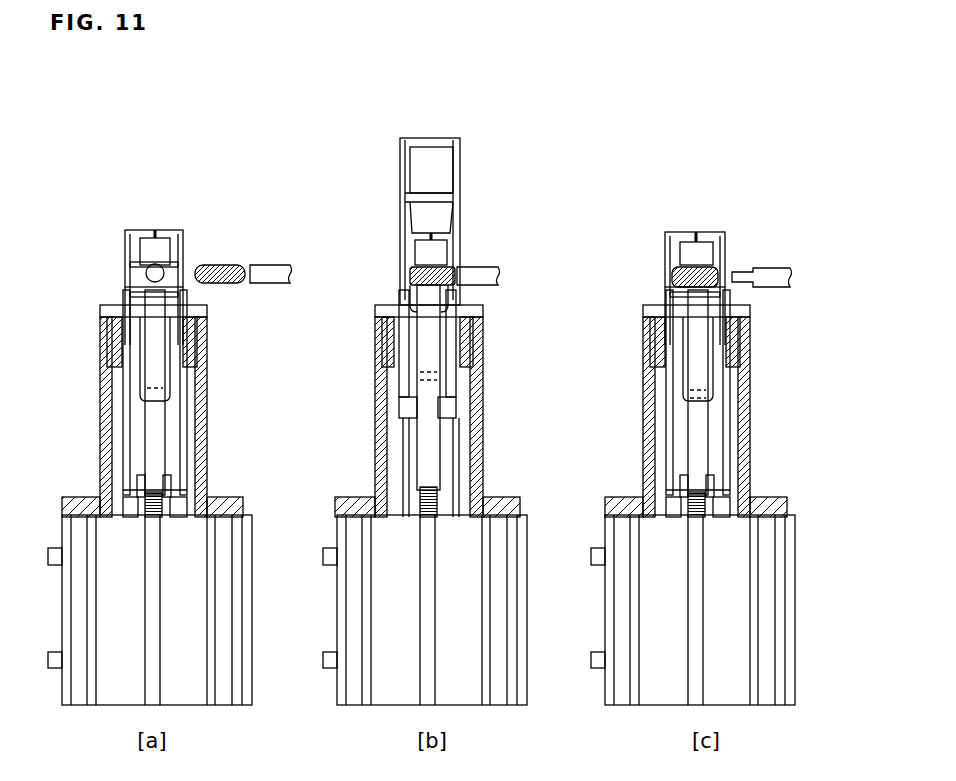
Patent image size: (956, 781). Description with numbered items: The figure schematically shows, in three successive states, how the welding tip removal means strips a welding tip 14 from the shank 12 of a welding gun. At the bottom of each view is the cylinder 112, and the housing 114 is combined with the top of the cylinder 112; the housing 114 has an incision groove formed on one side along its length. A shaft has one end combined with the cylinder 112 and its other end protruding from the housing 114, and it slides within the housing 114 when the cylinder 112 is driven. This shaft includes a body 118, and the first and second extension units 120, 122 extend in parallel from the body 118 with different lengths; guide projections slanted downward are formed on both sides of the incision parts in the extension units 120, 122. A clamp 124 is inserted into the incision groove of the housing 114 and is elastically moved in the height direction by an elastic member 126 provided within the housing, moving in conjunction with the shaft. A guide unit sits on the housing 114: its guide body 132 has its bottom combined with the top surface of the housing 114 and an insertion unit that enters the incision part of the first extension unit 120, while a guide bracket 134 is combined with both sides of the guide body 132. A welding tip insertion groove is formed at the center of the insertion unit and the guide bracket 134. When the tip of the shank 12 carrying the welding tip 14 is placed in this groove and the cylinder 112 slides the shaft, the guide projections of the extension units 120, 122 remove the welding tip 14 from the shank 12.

The shank 12 is at (268, 265).
The welding tip 14 is at (220, 265).
The cylinder 112 is at (228, 605).
The housing 114 is at (203, 460).
The body 118 is at (173, 405).
The first extension unit 120 is at (128, 230).
The second extension unit 122 is at (180, 293).
The clamp 124 is at (155, 435).
The elastic member 126 is at (165, 492).
The guide body 132 is at (143, 275).
The guide bracket 134 is at (178, 238).